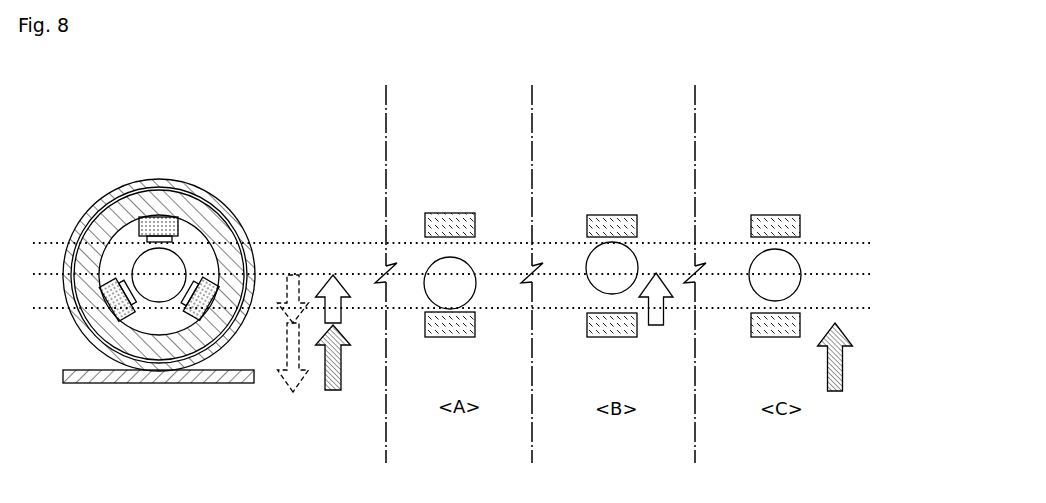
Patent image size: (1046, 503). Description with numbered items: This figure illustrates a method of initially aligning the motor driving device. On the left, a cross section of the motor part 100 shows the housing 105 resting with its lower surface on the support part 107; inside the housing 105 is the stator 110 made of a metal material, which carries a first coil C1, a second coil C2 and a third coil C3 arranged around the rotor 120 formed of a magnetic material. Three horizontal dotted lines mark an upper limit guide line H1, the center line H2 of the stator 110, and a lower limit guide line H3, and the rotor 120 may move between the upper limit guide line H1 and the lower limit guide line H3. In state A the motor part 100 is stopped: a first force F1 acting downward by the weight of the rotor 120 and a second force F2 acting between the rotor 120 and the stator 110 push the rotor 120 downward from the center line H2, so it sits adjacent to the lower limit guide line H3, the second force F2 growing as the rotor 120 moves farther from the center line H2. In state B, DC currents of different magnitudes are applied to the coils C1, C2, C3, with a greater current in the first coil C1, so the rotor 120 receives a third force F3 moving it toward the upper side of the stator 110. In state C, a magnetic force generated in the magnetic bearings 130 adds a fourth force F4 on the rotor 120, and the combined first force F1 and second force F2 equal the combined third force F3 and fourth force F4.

The motor part 100 is at (87, 106).
The housing 105 is at (152, 180).
The stator 110 is at (202, 212).
The rotor 120 is at (138, 262).
The magnetic bearings 130 is at (450, 213).
The support part 107 is at (87, 384).
The first coil C1 is at (170, 223).
The second coil C2 is at (203, 313).
The third coil C3 is at (110, 299).
The first force F1 is at (293, 275).
The second force F2 is at (293, 393).
The third force F3 is at (333, 275).
The fourth force F4 is at (333, 391).
The upper limit guide line H1 is at (469, 243).
The center line H2 is at (469, 276).
The lower limit guide line H3 is at (469, 310).